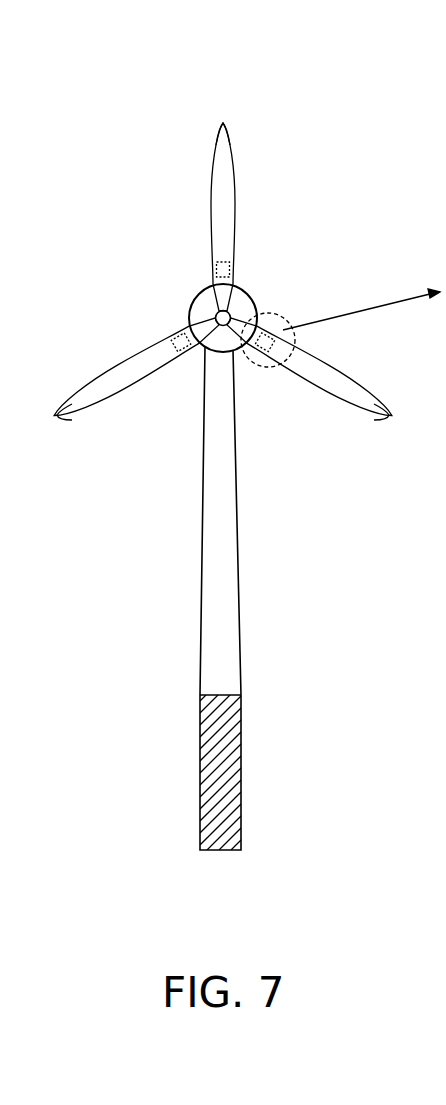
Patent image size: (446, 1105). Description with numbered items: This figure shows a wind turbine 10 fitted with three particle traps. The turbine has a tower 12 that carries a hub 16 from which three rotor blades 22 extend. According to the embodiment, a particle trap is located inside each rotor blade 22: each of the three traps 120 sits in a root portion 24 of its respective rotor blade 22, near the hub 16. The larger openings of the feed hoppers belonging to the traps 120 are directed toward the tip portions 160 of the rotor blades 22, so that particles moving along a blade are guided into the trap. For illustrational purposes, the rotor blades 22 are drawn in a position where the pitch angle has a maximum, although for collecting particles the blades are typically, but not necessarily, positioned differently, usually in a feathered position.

The wind turbine 10 is at (120, 81).
The tower 12 is at (200, 682).
The hub 16 is at (190, 306).
The rotor blade 22 is at (212, 203).
The root portion 24 is at (212, 272).
The trap 120 is at (235, 258).
The tip portion 160 is at (223, 124).